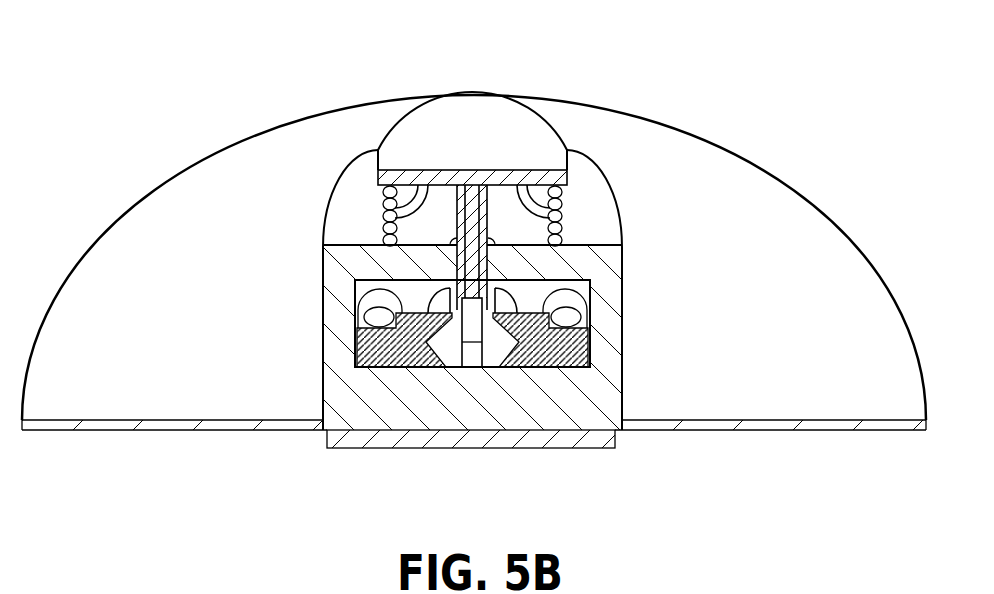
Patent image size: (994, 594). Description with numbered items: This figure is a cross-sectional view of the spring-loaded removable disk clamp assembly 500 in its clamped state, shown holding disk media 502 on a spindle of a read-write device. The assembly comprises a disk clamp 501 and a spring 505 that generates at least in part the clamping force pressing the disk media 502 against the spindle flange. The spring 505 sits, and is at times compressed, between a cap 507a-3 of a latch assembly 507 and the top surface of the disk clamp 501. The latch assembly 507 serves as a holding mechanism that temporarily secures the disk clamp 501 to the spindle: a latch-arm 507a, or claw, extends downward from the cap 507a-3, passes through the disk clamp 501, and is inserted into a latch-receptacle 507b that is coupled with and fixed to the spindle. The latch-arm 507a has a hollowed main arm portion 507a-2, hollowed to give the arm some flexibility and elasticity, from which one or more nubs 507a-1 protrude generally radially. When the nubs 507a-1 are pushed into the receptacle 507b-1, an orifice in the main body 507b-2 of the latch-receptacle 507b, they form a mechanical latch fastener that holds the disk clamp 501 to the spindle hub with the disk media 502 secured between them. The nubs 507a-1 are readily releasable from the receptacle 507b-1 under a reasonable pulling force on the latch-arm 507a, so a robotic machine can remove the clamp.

The spring-loaded removable disk clamp assembly 500 is at (468, 86).
The disk clamp 501 is at (337, 370).
The disk media 502 is at (838, 402).
The spring 505 is at (573, 210).
The latch assembly 507 is at (520, 130).
The latch-arm 507a is at (457, 230).
The nub 507a-1 is at (490, 350).
The hollowed main arm portion 507a-2 is at (492, 283).
The cap 507a-3 is at (545, 165).
The latch-receptacle 507b is at (590, 344).
The receptacle 507b-1 is at (445, 307).
The main body 507b-2 is at (588, 396).